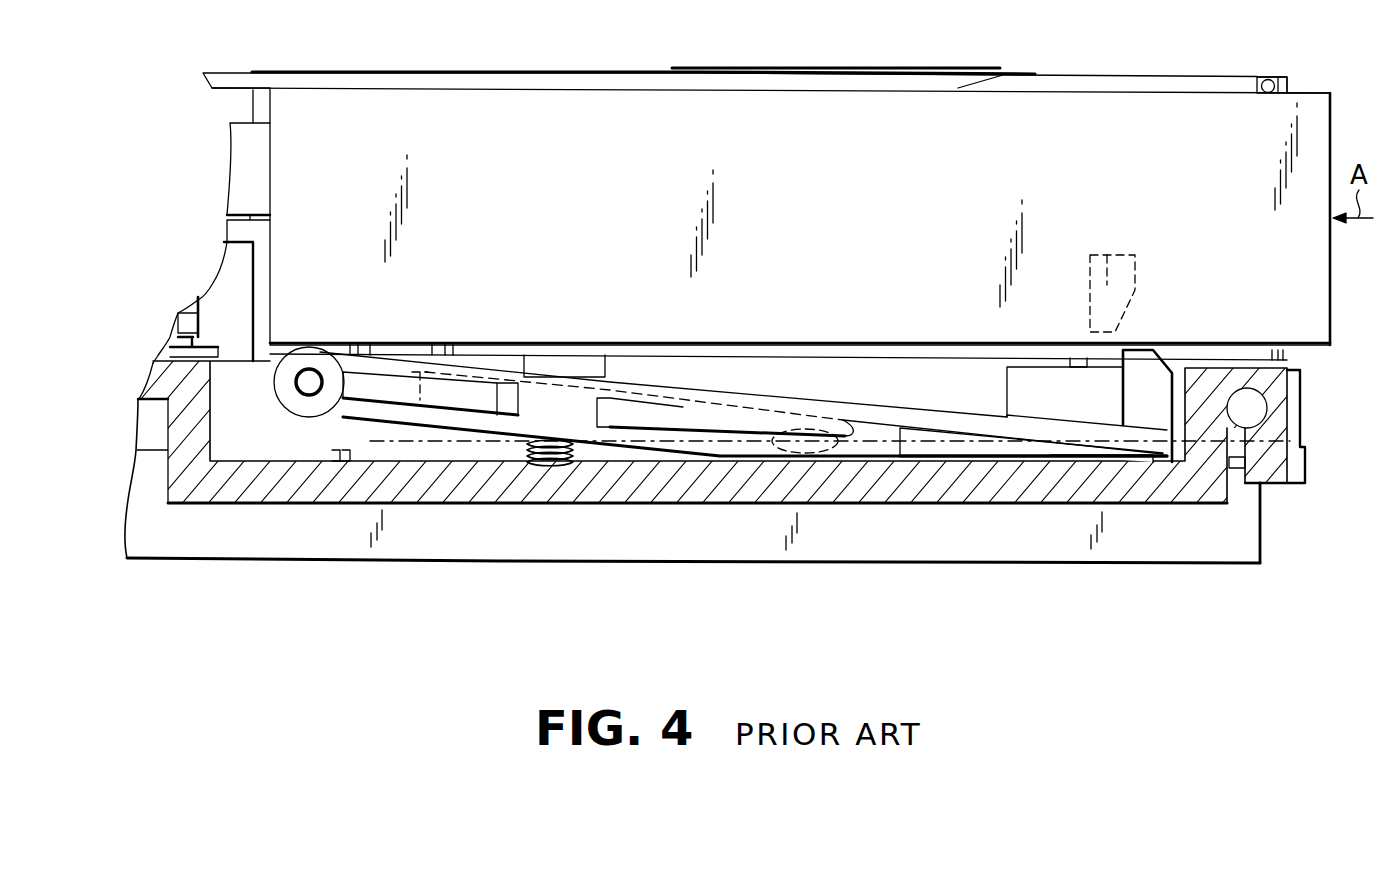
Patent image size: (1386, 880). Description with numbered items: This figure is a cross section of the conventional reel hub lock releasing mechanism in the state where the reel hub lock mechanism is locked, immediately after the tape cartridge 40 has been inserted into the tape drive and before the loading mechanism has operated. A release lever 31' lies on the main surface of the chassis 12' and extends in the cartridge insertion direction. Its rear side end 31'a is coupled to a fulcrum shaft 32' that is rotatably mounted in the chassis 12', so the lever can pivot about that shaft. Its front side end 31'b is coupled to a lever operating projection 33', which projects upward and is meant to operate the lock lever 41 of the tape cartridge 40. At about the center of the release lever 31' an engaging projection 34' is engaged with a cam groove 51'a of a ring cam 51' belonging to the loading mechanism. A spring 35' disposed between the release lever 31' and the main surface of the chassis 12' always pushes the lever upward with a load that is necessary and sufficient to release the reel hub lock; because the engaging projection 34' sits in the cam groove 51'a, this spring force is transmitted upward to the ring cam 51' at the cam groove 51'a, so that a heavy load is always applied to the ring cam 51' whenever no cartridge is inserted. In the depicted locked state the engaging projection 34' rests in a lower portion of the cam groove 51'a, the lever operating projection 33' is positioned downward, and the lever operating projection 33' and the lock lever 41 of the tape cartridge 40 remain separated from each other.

The tape cartridge 40 is at (1072, 155).
The lock lever 41 is at (1100, 254).
The ring cam 51' is at (805, 355).
The cam groove 51'a is at (583, 339).
The fulcrum shaft 32' is at (277, 499).
The rear side end 31'a is at (411, 492).
The chassis 12' is at (693, 375).
The spring 35' is at (547, 531).
The engaging projection 34' is at (828, 534).
The release lever 31' is at (749, 486).
The front side end 31'b is at (1048, 511).
The lever operating projection 33' is at (1190, 485).